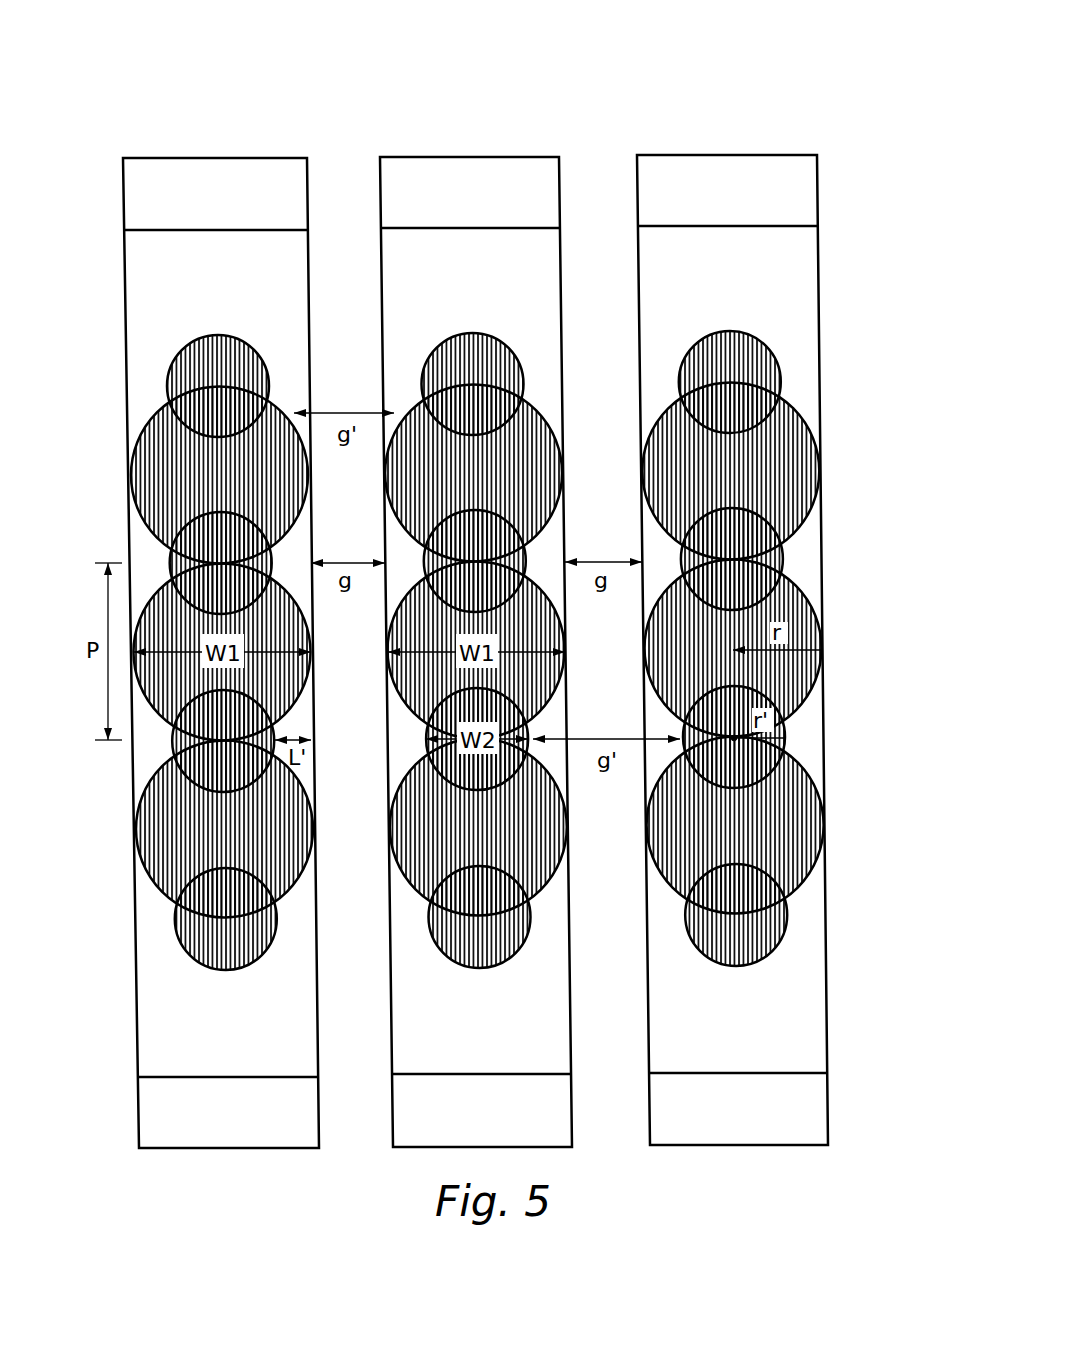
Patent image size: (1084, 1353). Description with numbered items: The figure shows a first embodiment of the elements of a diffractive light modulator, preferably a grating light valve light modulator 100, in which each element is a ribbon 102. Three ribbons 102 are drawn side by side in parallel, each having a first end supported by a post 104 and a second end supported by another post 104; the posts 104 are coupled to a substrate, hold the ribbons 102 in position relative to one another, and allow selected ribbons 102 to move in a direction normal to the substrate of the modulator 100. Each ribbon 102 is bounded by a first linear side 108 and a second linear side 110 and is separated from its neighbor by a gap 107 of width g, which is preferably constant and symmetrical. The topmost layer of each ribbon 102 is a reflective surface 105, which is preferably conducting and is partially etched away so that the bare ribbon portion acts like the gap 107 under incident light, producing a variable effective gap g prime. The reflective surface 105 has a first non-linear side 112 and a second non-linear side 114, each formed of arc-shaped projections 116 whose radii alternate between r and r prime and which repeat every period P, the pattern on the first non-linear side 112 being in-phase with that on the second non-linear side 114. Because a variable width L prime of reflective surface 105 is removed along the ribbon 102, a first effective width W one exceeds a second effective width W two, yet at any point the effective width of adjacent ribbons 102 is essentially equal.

The grating light valve light modulator 100 is at (819, 108).
The ribbon 102 is at (833, 1038).
The post 104 is at (780, 193).
The reflective surface 105 is at (222, 960).
The gap 107 is at (330, 806).
The first linear side 108 is at (128, 352).
The second linear side 110 is at (372, 345).
The first non-linear side 112 is at (655, 405).
The second non-linear side 114 is at (801, 531).
The arc-shaped projection 116 is at (821, 467).